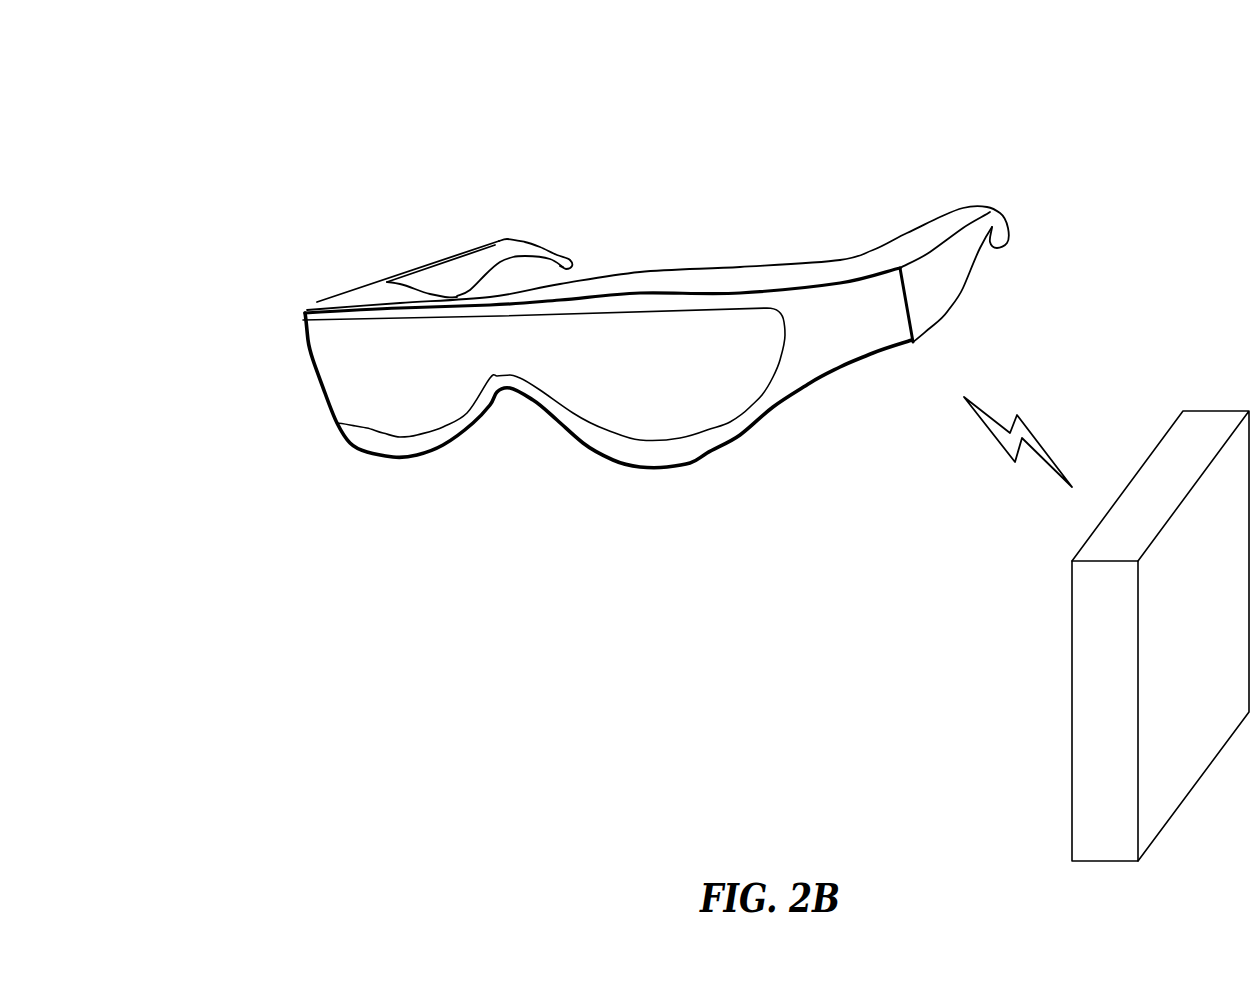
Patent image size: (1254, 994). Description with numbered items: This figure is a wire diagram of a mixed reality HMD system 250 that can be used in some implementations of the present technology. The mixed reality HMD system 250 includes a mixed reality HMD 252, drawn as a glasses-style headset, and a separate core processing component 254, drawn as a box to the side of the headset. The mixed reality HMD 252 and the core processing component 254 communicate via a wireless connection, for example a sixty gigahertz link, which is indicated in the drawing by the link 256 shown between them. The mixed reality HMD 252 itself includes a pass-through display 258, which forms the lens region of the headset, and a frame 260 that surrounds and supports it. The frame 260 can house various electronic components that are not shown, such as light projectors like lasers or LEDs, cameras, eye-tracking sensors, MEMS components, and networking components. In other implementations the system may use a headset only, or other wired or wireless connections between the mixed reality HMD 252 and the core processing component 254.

The mixed reality HMD system 250 is at (264, 124).
The mixed reality HMD 252 is at (304, 321).
The core processing component 254 is at (1072, 634).
The link 256 is at (1008, 453).
The pass-through display 258 is at (783, 313).
The frame 260 is at (937, 277).